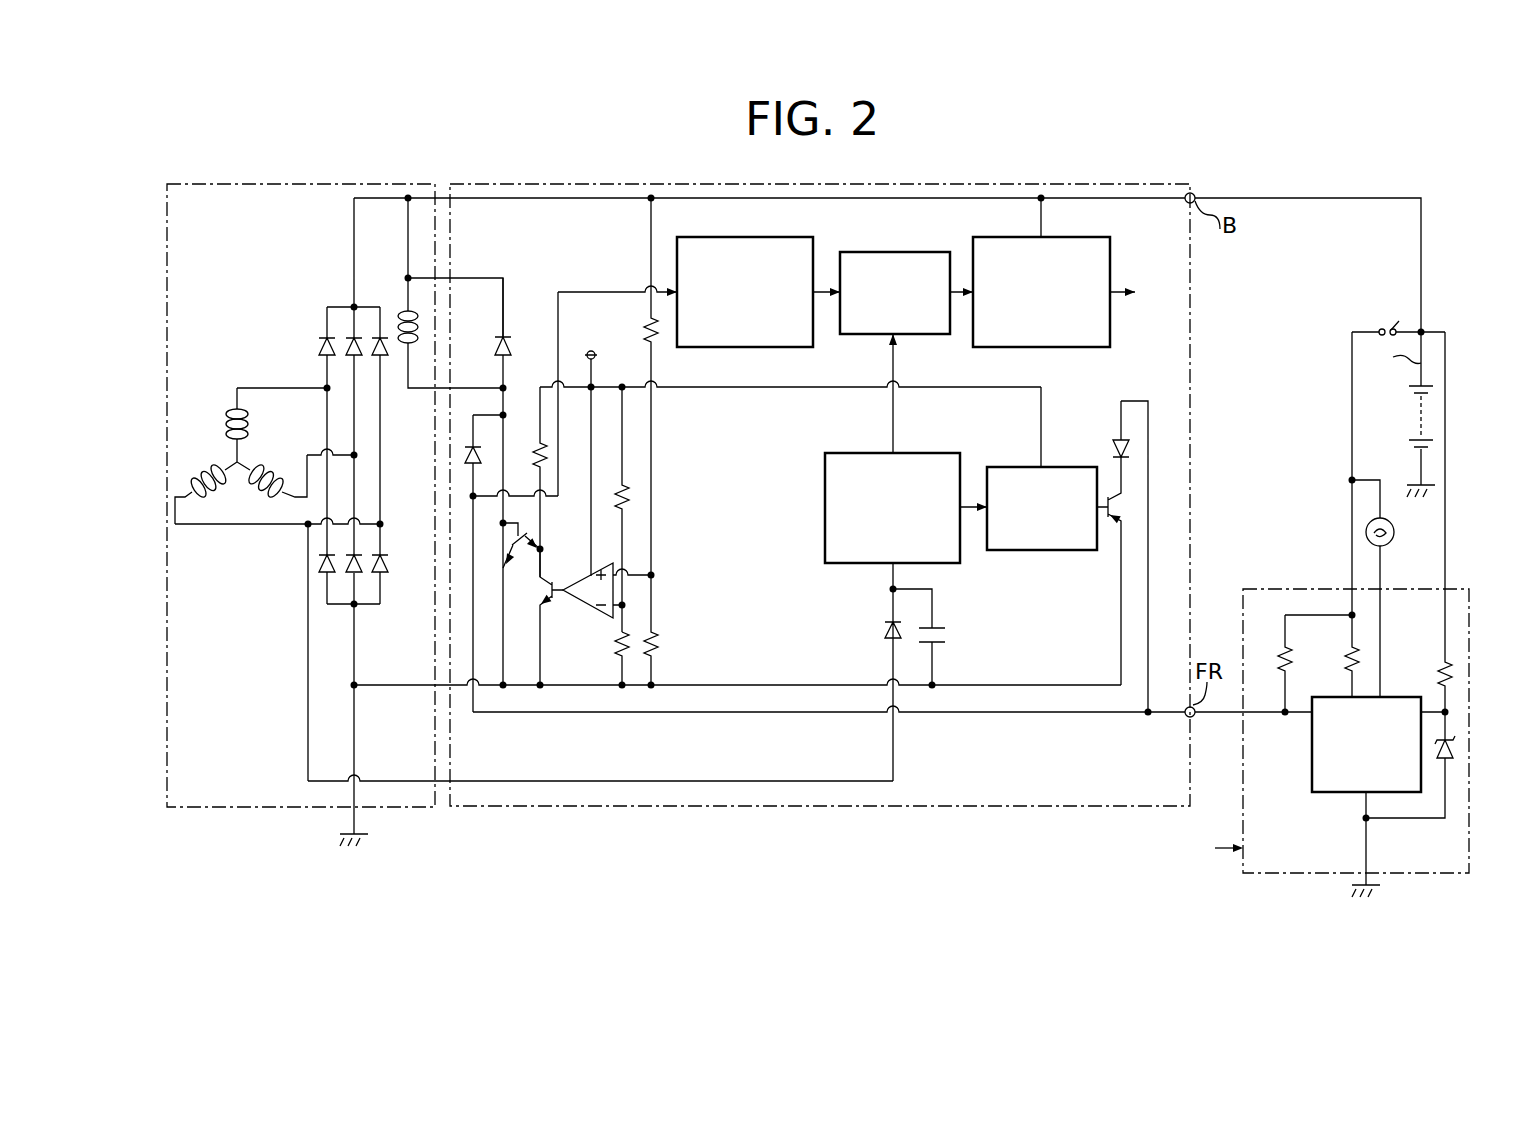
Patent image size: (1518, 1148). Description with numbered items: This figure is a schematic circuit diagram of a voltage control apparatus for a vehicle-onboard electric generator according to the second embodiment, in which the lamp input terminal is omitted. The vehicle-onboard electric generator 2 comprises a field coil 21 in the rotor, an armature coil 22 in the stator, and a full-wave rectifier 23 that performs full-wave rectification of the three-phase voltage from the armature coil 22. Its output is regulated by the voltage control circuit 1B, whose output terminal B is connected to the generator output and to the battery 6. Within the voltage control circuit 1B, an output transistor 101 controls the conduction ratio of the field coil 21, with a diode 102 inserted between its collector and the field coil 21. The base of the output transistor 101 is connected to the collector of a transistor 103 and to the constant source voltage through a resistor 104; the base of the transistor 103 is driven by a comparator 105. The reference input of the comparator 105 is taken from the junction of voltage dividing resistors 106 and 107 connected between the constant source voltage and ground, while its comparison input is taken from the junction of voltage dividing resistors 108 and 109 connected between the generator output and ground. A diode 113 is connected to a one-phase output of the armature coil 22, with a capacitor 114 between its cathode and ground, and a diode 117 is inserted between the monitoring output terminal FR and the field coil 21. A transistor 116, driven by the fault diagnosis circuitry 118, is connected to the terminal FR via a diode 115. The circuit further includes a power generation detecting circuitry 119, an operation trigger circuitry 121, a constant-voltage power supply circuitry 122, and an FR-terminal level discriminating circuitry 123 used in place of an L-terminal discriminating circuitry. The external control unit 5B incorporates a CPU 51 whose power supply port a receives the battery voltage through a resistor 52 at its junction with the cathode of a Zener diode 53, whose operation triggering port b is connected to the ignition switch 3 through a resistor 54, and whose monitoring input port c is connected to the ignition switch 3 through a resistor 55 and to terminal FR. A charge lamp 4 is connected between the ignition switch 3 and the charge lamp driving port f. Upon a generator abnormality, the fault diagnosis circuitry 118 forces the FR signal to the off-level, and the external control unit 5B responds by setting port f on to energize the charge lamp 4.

The vehicle-onboard electric generator 2 is at (238, 809).
The field coil 21 is at (405, 321).
The armature coil 22 is at (223, 423).
The full-wave rectifier 23 is at (347, 387).
The voltage control circuit 1B is at (831, 808).
The output transistor 101 is at (553, 543).
The diode 102 is at (516, 345).
The transistor 103 is at (547, 596).
The resistor 104 is at (531, 436).
The comparator 105 is at (584, 610).
The voltage dividing resistor 106 is at (627, 483).
The voltage dividing resistor 107 is at (616, 658).
The voltage dividing resistor 108 is at (649, 318).
The voltage dividing resistor 109 is at (641, 658).
The diode 113 is at (880, 632).
The capacitor 114 is at (948, 637).
The diode 115 is at (1117, 430).
The transistor 116 is at (1108, 522).
The diode 117 is at (472, 443).
The fault diagnosis circuitry 118 is at (1065, 467).
The power generation detecting circuitry 119 is at (930, 453).
The operation trigger circuitry 121 is at (893, 252).
The constant-voltage power supply circuitry 122 is at (1055, 236).
The FR-terminal level discriminating circuitry 123 is at (700, 236).
The ignition switch 3 is at (1387, 322).
The charge lamp 4 is at (1394, 540).
The external control unit 5B is at (1311, 873).
The battery 6 is at (1415, 426).
The CPU 51 is at (1393, 697).
The resistor 52 is at (1443, 665).
The Zener diode 53 is at (1445, 768).
The resistor 54 is at (1349, 650).
The resistor 55 is at (1283, 648).